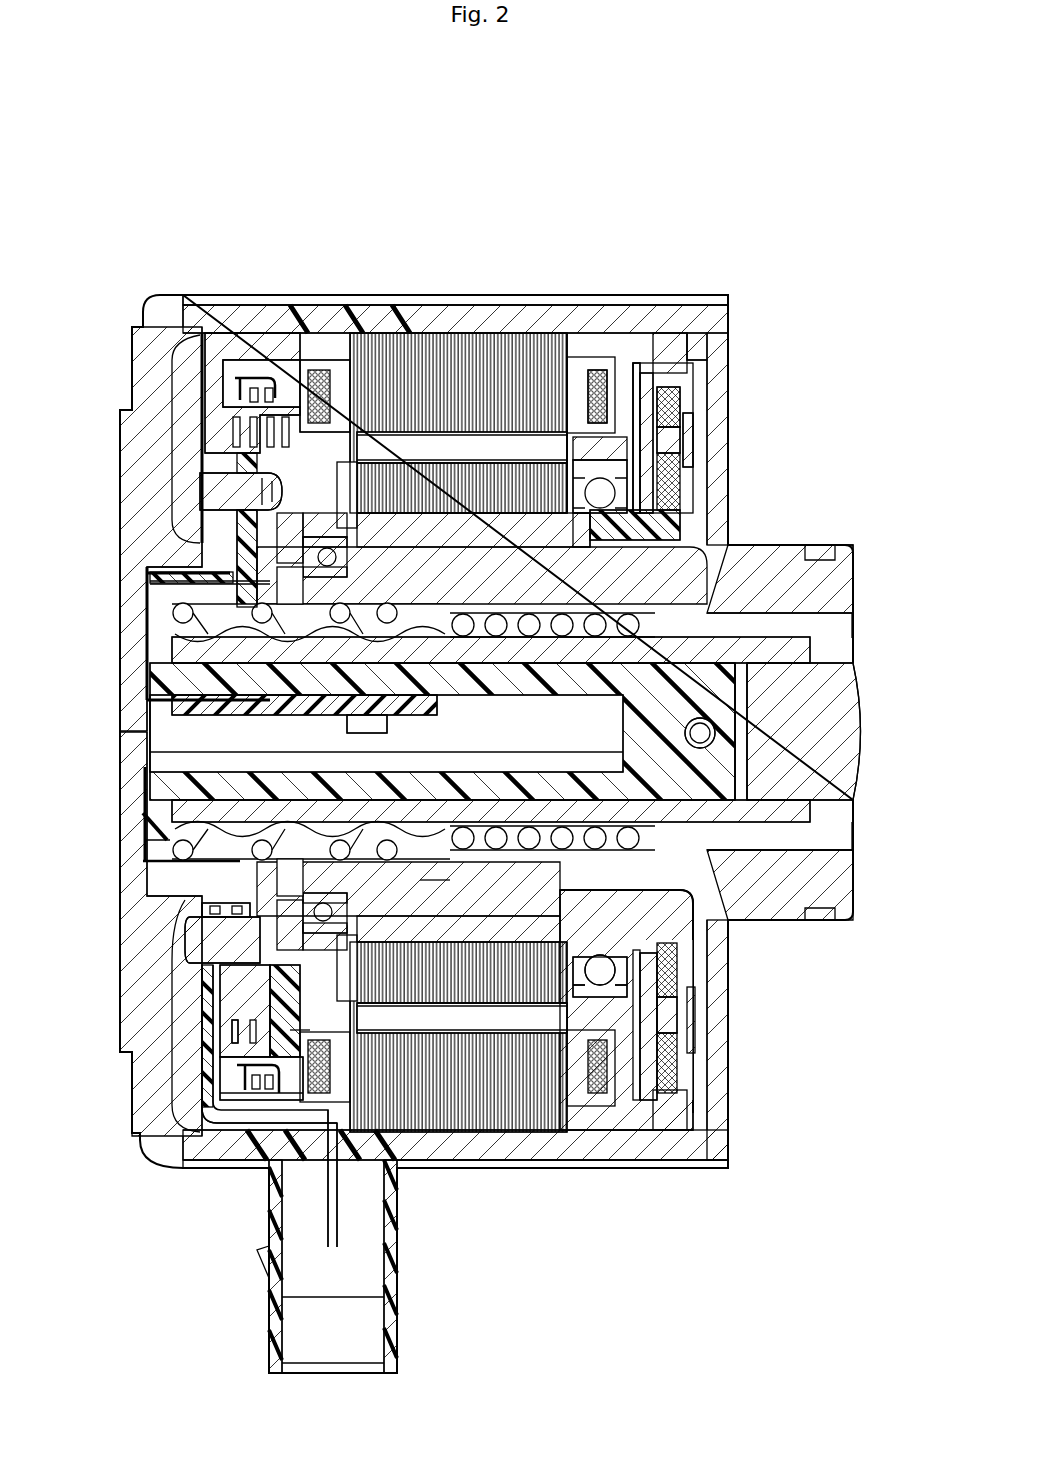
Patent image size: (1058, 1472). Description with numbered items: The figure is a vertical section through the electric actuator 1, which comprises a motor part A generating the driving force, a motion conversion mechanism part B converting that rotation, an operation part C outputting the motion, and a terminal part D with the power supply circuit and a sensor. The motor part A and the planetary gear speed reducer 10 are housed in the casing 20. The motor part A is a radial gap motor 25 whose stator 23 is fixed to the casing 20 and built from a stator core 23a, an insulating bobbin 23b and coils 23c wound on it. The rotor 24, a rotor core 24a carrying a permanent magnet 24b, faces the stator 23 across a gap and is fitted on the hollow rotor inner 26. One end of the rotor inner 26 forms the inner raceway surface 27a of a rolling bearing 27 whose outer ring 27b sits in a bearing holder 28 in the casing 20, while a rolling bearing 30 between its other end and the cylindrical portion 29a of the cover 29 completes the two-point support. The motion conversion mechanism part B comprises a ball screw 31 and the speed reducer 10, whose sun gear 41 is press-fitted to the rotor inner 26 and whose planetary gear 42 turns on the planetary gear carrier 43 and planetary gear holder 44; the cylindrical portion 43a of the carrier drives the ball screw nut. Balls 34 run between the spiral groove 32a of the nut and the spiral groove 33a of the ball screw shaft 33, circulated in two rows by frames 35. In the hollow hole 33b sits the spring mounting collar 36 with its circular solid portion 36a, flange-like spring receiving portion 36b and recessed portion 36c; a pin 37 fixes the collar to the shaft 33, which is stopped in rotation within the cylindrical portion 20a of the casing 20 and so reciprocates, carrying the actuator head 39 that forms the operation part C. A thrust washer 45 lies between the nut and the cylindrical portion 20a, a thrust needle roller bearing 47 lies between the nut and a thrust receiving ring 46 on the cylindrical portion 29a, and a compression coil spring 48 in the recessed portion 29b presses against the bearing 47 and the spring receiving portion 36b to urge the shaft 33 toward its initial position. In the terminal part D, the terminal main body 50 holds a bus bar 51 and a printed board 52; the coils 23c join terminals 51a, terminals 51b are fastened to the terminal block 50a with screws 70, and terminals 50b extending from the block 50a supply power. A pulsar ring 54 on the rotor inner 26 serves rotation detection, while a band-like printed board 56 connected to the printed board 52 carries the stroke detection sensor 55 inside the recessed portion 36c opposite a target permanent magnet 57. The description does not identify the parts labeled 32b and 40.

The electric actuator 1 is at (572, 178).
The planetary gear speed reducer 10 is at (692, 430).
The casing 20 is at (676, 294).
The cylindrical portion 20a is at (790, 545).
The stator 23 is at (520, 362).
The stator core 23a is at (522, 486).
The bobbin 23b is at (538, 536).
The coils 23c is at (320, 370).
The rotor 24 is at (586, 452).
The rotor core 24a is at (385, 443).
The permanent magnet 24b is at (440, 477).
The radial gap motor 25 is at (474, 330).
The rotor inner 26 is at (655, 420).
The rolling bearing 27 is at (596, 972).
The inner raceway surface 27a is at (620, 1000).
The outer ring 27b is at (598, 1000).
The bearing holder 28 is at (612, 1128).
The cover 29 is at (118, 480).
The cylindrical portion 29a is at (190, 943).
The recessed portion 29b is at (155, 840).
The rolling bearing 30 is at (230, 1067).
The ball screw 31 is at (500, 1050).
The spiral groove 32a is at (475, 945).
The rotor core portion 32b is at (452, 1020).
The ball screw shaft 33 is at (650, 900).
The spiral groove 33a is at (430, 890).
The hollow hole 33b is at (162, 680).
The balls 34 is at (660, 1018).
The frames 35 is at (585, 583).
The spring mounting collar 36 is at (263, 892).
The circular solid portion 36a is at (708, 677).
The spring receiving portion 36b is at (160, 835).
The recessed portion 36c is at (563, 770).
The pin 37 is at (705, 746).
The actuator head 39 is at (866, 722).
The sensor holder 40 is at (678, 355).
The sun gear 41 is at (662, 520).
The planetary gear 42 is at (673, 402).
The planetary gear carrier 43 is at (682, 460).
The cylindrical portion 43a is at (687, 1030).
The planetary gear holder 44 is at (650, 392).
The thrust washer 45 is at (660, 873).
The thrust receiving ring 46 is at (270, 1000).
The thrust needle roller bearing 47 is at (312, 1040).
The compression coil spring 48 is at (150, 630).
The terminal main body 50 is at (240, 330).
The terminal block 50a is at (210, 967).
The terminals 50b is at (327, 1207).
The bus bar 51 is at (216, 432).
The terminals 51a is at (268, 376).
The terminals 51b is at (255, 905).
The printed board 52 is at (240, 535).
The pulsar ring 54 is at (213, 1025).
The stroke detection sensor 55 is at (357, 725).
The printed board 56 is at (193, 707).
The permanent magnet 57 is at (200, 783).
The screws 70 is at (228, 918).
The motor part A is at (500, 330).
The motion conversion mechanism part B is at (640, 590).
The operation part C is at (826, 639).
The terminal part D is at (346, 296).